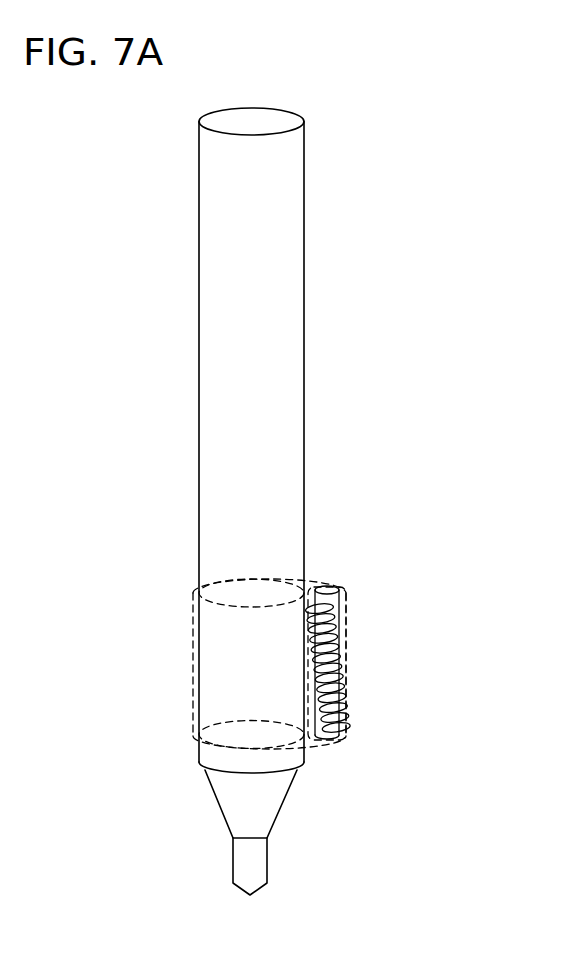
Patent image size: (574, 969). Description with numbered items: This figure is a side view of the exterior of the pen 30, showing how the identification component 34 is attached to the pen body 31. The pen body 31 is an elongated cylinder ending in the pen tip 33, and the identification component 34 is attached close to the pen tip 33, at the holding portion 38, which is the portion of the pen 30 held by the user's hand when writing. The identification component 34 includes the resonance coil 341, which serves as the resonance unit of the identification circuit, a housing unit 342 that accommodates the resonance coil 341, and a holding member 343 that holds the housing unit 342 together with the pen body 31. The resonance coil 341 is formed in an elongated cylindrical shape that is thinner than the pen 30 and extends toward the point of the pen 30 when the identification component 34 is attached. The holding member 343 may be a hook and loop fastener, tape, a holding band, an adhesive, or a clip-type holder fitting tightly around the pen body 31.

The pen 30 is at (348, 78).
The pen body 31 is at (304, 334).
The pen tip 33 is at (262, 887).
The identification component 34 is at (338, 548).
The resonance coil 341 is at (340, 665).
The housing unit 342 is at (346, 628).
The holding member 343 is at (193, 668).
The holding portion 38 is at (167, 617).